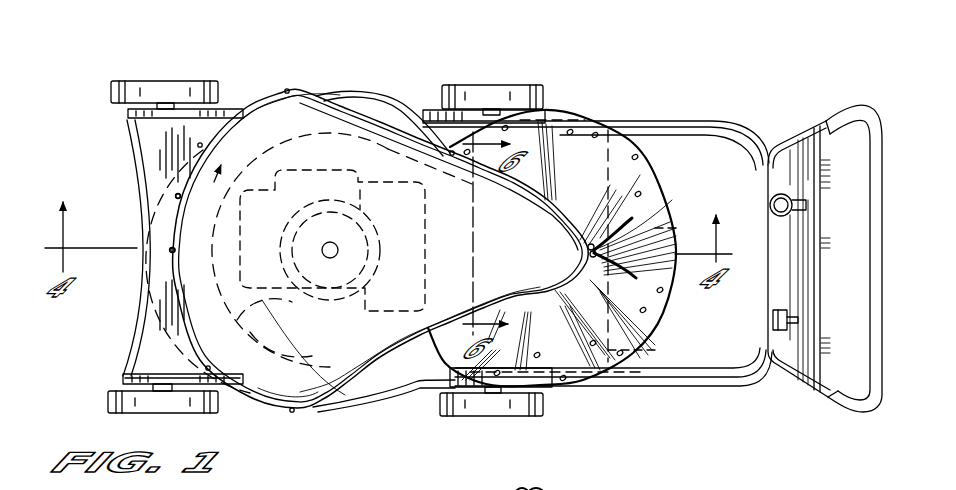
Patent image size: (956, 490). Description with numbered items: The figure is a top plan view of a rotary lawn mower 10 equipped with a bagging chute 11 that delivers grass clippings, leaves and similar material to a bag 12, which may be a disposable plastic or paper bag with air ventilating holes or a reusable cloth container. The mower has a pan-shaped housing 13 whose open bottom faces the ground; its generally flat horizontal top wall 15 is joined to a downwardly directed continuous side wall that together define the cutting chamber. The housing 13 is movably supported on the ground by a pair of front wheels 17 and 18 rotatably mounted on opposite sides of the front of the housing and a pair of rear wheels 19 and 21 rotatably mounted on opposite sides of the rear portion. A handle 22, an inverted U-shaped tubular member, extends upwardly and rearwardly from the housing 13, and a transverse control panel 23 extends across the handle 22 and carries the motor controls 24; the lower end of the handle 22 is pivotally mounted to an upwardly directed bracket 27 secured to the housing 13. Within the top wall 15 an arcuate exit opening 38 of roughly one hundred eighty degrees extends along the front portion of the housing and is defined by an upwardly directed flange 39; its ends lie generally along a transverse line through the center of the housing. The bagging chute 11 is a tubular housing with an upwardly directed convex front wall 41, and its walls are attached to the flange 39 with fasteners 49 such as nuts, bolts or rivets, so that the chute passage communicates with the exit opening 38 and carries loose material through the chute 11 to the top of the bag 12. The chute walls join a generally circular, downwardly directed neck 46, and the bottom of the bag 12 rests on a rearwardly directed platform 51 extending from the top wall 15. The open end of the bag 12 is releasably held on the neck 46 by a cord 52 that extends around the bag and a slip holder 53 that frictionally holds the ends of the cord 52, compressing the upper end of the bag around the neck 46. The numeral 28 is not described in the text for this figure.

The rotary lawn mower 10 is at (137, 175).
The bagging chute 11 is at (366, 366).
The bag 12 is at (594, 120).
The pan-shaped housing 13 is at (287, 88).
The top wall 15 is at (364, 98).
The front wheel 17 is at (130, 82).
The front wheel 18 is at (108, 403).
The rear wheel 19 is at (500, 86).
The rear wheel 21 is at (545, 409).
The handle 22 is at (708, 121).
The control panel 23 is at (792, 145).
The motor controls 24 is at (774, 318).
The bracket 27 is at (448, 109).
The engine mounting pad 28 is at (340, 168).
The exit opening 38 is at (284, 406).
The flange 39 is at (274, 328).
The front wall 41 is at (193, 285).
The neck 46 is at (556, 212).
The fasteners 49 is at (176, 197).
The platform 51 is at (620, 352).
The cord 52 is at (600, 247).
The slip holder 53 is at (590, 252).